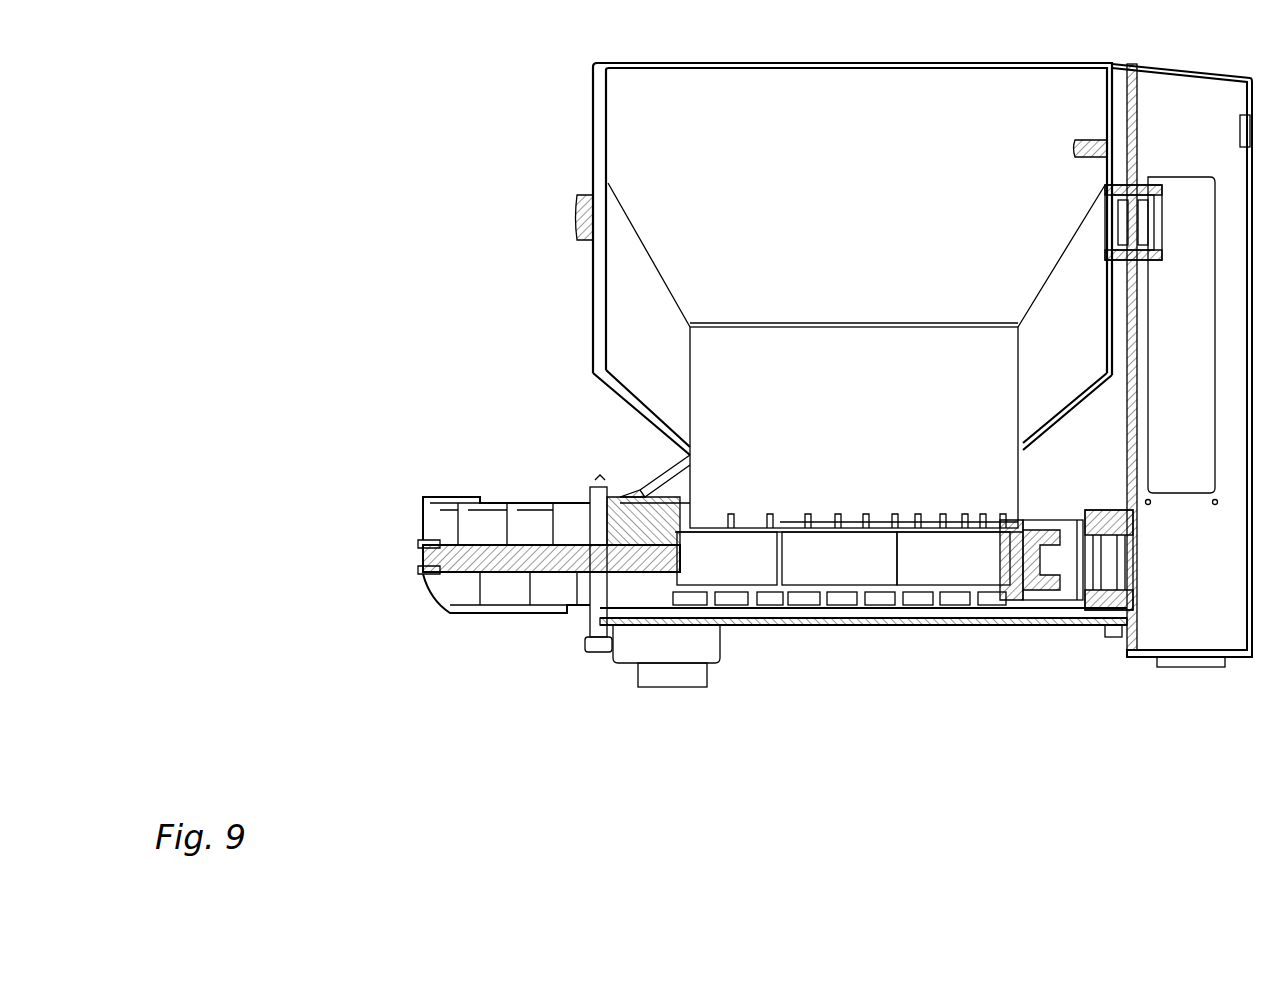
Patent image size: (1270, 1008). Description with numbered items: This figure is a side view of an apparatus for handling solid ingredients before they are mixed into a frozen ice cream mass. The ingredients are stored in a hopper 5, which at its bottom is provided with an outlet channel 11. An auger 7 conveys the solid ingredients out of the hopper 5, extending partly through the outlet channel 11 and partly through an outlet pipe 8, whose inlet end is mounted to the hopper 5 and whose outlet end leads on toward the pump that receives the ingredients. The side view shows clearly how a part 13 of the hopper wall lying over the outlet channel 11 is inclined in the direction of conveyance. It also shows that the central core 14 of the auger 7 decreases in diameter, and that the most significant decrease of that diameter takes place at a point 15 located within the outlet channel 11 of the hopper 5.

The hopper 5 is at (680, 153).
The auger 7 is at (423, 507).
The outlet pipe 8 is at (503, 497).
The outlet channel 11 is at (613, 497).
The part of the hopper wall 13 is at (647, 485).
The central core 14 is at (470, 613).
The point 15 is at (613, 643).